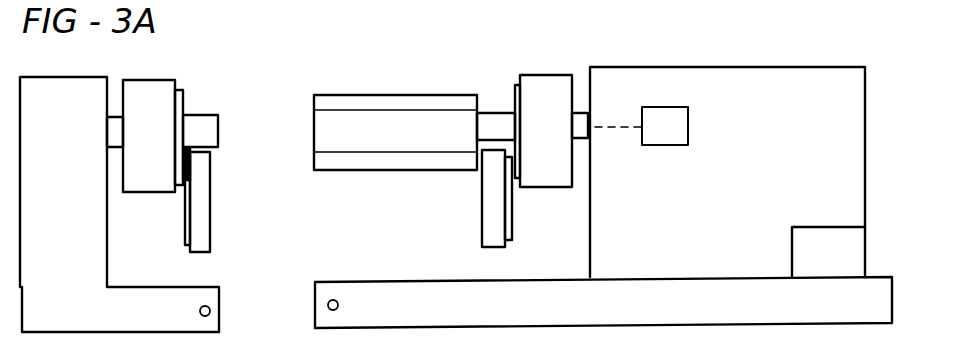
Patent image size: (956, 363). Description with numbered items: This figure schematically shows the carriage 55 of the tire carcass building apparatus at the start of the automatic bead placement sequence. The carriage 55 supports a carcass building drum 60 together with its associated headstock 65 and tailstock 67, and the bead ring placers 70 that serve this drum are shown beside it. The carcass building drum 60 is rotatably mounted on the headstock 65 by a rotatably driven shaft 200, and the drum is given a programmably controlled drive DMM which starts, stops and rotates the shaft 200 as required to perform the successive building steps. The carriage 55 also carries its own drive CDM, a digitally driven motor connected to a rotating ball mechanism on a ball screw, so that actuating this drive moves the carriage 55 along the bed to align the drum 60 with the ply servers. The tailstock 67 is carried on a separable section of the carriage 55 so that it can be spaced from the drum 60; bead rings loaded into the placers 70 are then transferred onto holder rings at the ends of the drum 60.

The carriage 55 is at (657, 311).
The carcass building drum 60 is at (368, 95).
The headstock 65 is at (737, 216).
The tailstock 67 is at (74, 203).
The bead ring placers 70 is at (487, 215).
The rotatably driven shaft 200 is at (585, 140).
The programmably controlled drive DMM is at (688, 130).
The carriage drive CDM is at (828, 252).